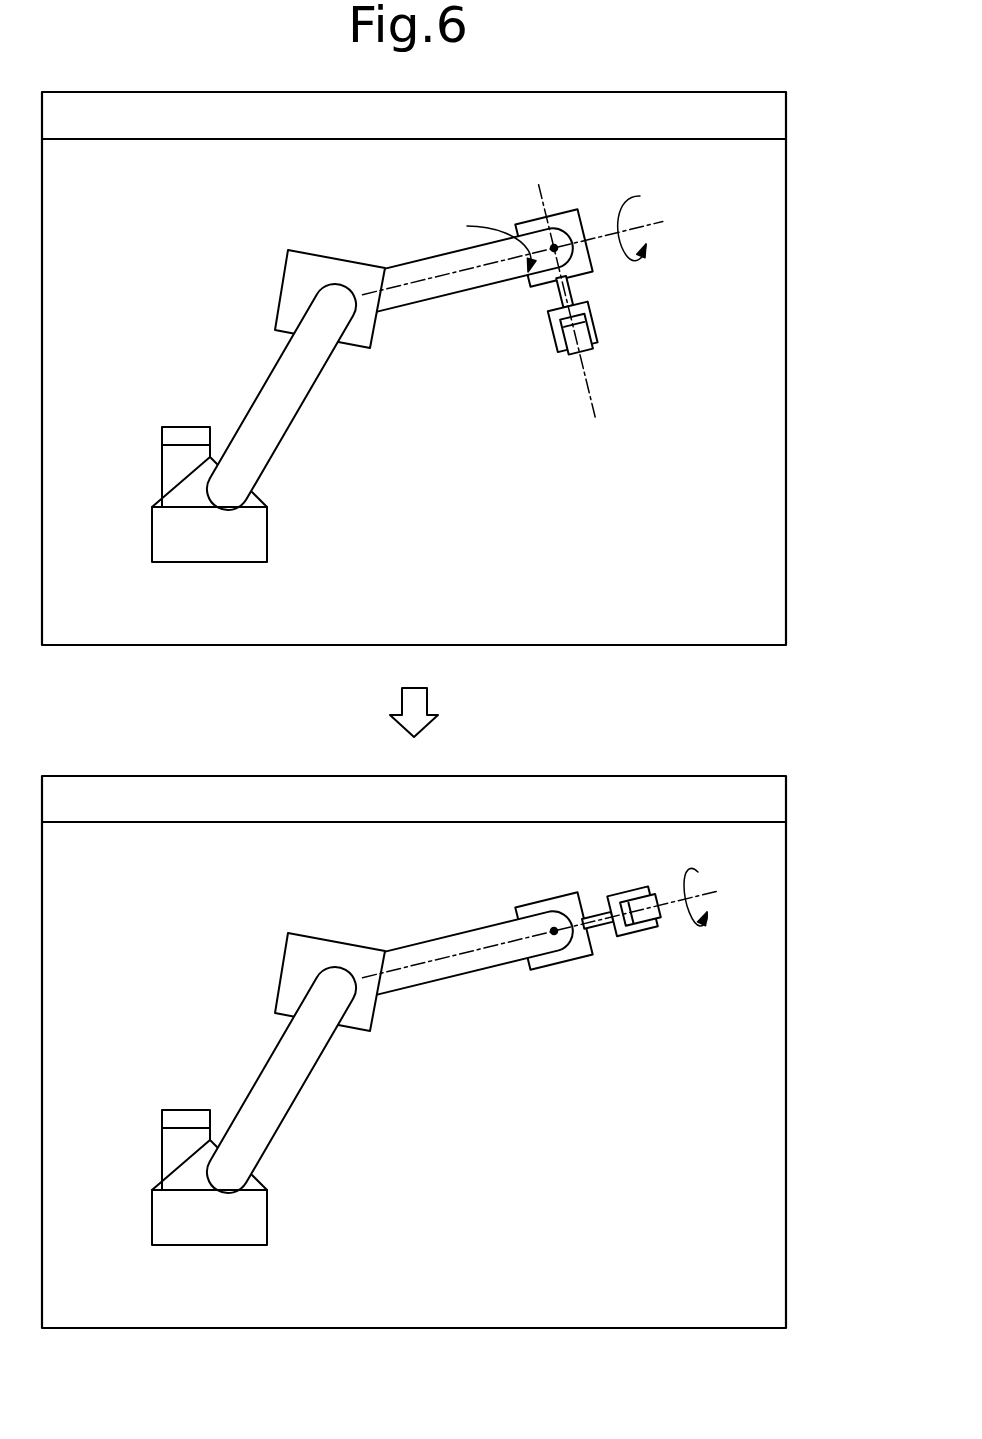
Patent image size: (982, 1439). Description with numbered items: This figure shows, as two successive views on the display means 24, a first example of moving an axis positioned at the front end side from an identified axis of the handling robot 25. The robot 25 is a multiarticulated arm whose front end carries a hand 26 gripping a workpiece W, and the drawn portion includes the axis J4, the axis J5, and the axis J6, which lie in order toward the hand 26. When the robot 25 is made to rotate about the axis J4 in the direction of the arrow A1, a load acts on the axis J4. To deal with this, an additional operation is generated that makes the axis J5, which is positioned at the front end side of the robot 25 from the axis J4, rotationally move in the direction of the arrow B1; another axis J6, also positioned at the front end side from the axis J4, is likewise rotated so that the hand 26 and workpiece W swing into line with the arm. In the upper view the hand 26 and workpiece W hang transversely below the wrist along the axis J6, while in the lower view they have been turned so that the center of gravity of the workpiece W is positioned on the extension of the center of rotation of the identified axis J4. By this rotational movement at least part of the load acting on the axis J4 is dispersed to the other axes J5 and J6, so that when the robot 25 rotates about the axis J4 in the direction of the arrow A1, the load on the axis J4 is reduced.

The display means 24 is at (787, 190).
The handling robot 25 is at (218, 251).
The hand 26 is at (592, 304).
The workpiece W is at (598, 350).
The axis J4 is at (430, 282).
The axis J5 is at (549, 243).
The axis J6 is at (597, 390).
The arrow A1 is at (640, 196).
The arrow B1 is at (482, 240).